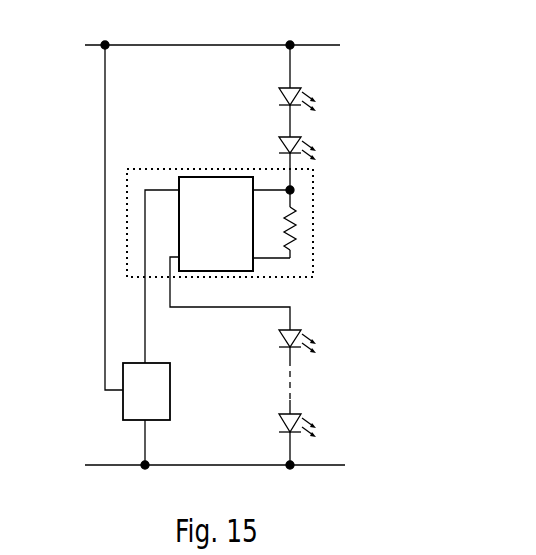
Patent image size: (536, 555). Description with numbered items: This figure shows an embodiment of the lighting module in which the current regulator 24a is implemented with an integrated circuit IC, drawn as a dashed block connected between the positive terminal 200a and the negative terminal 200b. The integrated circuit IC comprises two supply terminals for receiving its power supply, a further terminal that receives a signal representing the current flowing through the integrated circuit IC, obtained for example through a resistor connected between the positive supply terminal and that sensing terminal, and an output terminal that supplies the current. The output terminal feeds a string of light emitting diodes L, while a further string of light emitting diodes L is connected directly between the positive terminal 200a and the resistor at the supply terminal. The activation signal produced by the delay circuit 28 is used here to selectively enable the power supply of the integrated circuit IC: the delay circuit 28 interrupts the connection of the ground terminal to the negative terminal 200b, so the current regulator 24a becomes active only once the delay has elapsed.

The positive terminal 200a is at (183, 46).
The negative terminal 200b is at (186, 466).
The current regulator 24a is at (281, 196).
The integrated circuit IC is at (227, 182).
The light emitting diodes L is at (336, 96).
The delay circuit 28 is at (112, 408).